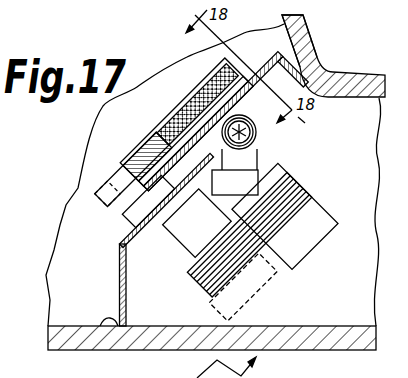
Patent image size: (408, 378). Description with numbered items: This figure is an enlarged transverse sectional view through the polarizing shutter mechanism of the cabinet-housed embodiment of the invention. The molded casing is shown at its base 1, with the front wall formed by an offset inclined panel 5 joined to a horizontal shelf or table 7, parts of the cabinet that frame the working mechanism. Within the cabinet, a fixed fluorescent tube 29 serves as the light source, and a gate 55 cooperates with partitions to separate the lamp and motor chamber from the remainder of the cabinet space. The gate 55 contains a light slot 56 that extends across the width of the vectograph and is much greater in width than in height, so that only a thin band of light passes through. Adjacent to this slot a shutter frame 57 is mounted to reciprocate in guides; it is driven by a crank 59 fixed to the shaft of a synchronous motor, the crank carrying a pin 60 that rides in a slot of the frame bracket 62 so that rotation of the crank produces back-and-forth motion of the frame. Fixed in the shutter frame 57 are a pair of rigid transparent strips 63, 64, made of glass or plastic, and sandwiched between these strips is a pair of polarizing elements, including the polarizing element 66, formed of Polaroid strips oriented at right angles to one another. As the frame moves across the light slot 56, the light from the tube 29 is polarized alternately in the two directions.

The base 1 is at (128, 343).
The inclined panel 5 is at (314, 32).
The horizontal shelf 7 is at (361, 72).
The fluorescent tube 29 is at (259, 137).
The gate 55 is at (190, 138).
The light slot 56 is at (200, 97).
The shutter frame 57 is at (133, 157).
The crank 59 is at (128, 218).
The pin 60 is at (103, 183).
The frame bracket 62 is at (112, 205).
The transparent strip 63 is at (198, 117).
The transparent strip 64 is at (225, 172).
The polarizing element 66 is at (158, 108).